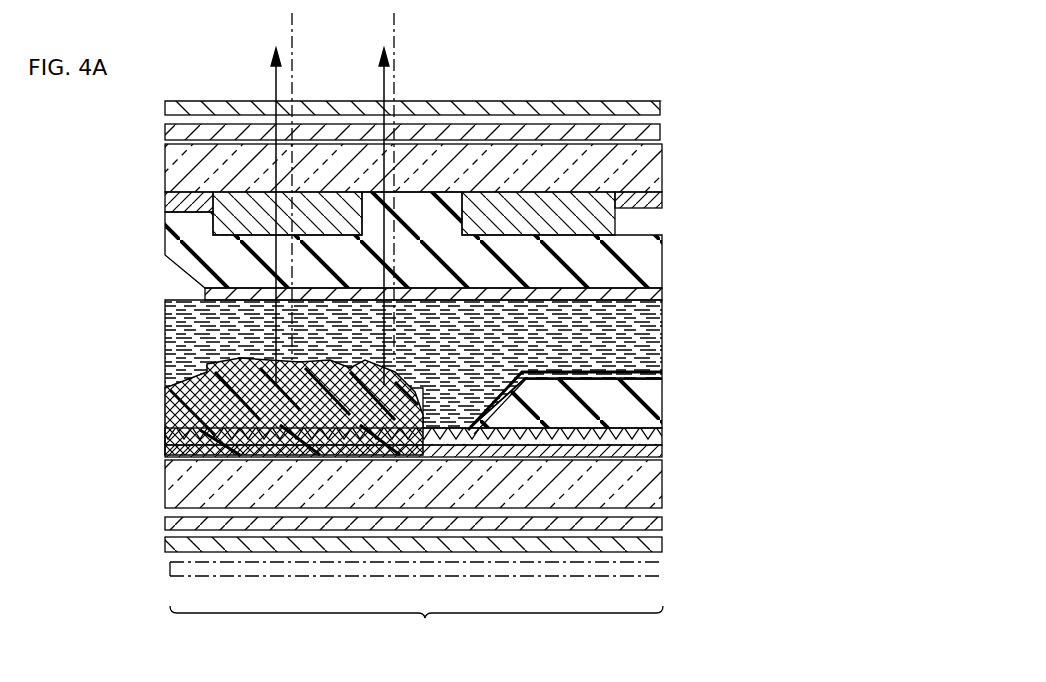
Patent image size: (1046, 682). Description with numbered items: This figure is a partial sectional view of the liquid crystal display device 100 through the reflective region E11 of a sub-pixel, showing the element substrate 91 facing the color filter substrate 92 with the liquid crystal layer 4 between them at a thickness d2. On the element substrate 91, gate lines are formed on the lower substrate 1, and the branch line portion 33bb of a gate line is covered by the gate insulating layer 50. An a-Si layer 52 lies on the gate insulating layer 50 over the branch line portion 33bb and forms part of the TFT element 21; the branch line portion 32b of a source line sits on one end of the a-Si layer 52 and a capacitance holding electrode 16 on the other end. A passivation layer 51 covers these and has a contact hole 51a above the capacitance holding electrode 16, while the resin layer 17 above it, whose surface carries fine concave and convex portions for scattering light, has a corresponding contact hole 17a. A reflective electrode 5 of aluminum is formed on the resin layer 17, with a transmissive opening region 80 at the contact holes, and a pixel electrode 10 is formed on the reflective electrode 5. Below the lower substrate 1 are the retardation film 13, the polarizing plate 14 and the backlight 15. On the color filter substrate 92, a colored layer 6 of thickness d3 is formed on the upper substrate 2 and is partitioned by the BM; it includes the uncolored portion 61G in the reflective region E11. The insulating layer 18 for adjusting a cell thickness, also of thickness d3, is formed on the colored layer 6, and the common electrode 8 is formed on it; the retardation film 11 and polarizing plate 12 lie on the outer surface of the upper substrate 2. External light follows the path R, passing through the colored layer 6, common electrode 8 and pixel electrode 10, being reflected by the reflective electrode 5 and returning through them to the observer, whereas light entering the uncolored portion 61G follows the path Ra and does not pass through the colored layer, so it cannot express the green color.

The liquid crystal display device 100 is at (592, 88).
The polarizing plate 12 is at (660, 107).
The retardation film 11 is at (660, 130).
The upper substrate 2 is at (660, 168).
The element BM is at (660, 198).
The colored layer 6 is at (660, 232).
The insulating layer for adjusting a cell thickness 18 is at (640, 280).
The uncolored portion 61G is at (408, 266).
The liquid crystal layer 4 is at (662, 322).
The pixel electrode 10 is at (540, 367).
The resin layer 17 is at (662, 388).
The transmissive opening region 80 is at (410, 442).
The TFT element 21 is at (241, 407).
The a-Si layer 52 is at (355, 364).
The reflective electrode 5 is at (456, 444).
The common electrode 8 is at (498, 300).
The passivation layer 51 is at (662, 436).
The gate insulating layer 50 is at (662, 452).
The branch line portion 32b is at (168, 440).
The lower substrate 1 is at (660, 486).
The retardation film 13 is at (662, 524).
The polarizing plate 14 is at (662, 546).
The backlight 15 is at (662, 576).
The branch line portion 33bb is at (318, 457).
The capacitance holding electrode 16 is at (425, 457).
The contact hole 51a is at (463, 457).
The contact hole 17a is at (510, 457).
The reflective region E11 is at (416, 626).
The color filter substrate 92 is at (151, 212).
The element substrate 91 is at (155, 396).
The path R is at (294, 72).
The path Ra is at (396, 72).
The thickness d3 is at (442, 160).
The thickness d2 is at (312, 300).